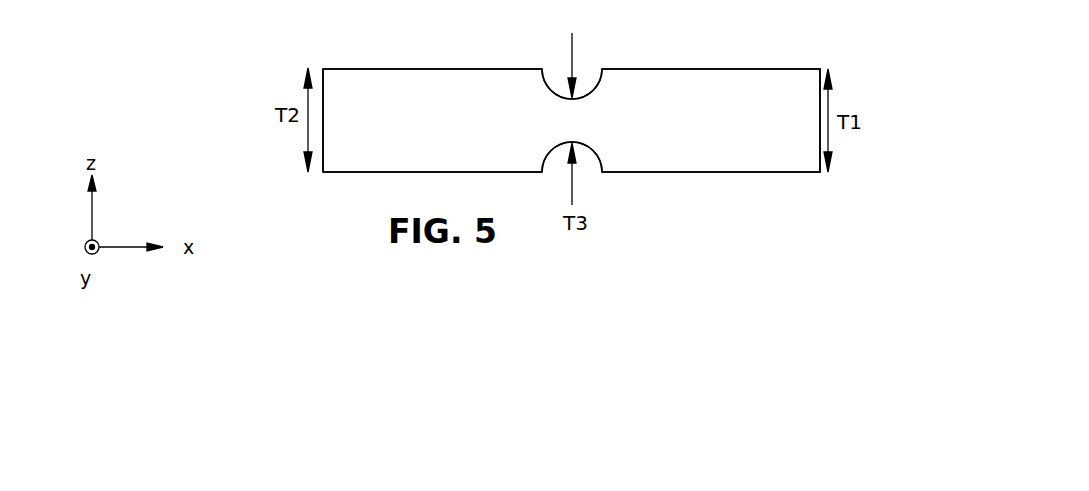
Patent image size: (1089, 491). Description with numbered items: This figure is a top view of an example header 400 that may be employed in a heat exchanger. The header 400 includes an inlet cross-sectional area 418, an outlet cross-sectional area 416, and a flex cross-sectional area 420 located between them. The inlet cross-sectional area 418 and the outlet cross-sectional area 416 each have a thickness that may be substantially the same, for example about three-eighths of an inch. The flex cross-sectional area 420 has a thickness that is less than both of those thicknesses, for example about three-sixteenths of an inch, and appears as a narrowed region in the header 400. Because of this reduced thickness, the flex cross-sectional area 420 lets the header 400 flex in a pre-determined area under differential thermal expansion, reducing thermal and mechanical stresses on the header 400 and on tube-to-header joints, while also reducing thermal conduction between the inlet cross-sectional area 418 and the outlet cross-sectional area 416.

The header 400 is at (982, 133).
The outlet cross-sectional area 416 is at (410, 105).
The inlet cross-sectional area 418 is at (738, 115).
The flex cross-sectional area 420 is at (567, 113).